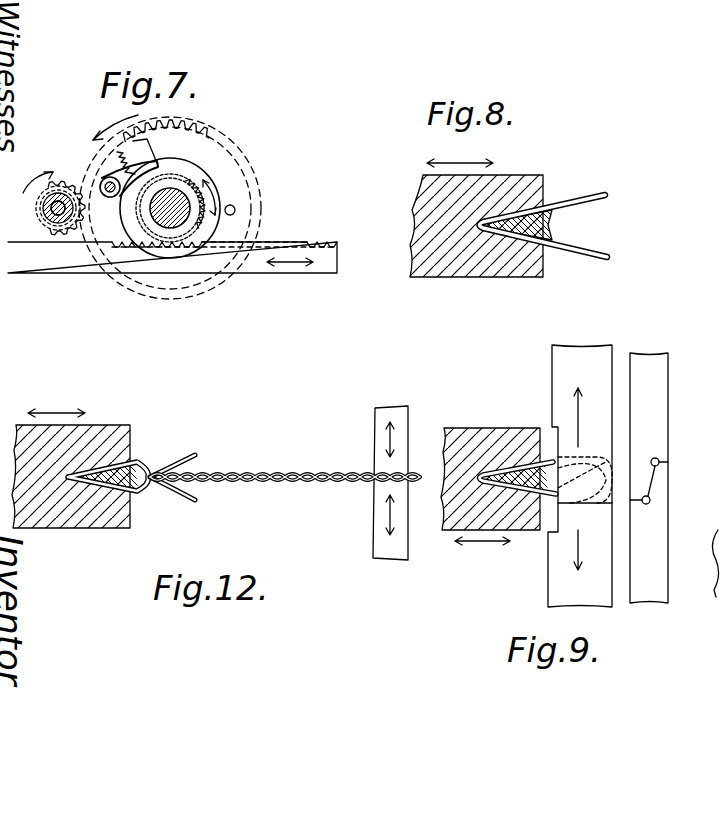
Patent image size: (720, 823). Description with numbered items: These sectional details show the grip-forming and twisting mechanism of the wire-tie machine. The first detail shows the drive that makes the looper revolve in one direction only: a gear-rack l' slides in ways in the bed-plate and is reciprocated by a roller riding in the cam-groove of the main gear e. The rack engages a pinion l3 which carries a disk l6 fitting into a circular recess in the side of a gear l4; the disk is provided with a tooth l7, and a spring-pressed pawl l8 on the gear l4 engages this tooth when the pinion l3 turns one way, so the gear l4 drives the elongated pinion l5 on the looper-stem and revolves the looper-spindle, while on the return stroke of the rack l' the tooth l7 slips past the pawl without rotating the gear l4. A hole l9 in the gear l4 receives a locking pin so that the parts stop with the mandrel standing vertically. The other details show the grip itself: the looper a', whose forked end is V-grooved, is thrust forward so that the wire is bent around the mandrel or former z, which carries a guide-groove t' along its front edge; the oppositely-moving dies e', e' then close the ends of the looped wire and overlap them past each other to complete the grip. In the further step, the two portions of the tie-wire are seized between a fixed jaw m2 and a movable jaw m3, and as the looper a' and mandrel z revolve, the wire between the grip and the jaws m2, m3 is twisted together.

In FIG. 7, the gear-rack l' is at (172, 280).
In FIG. 7, the pinion l3 is at (193, 220).
In FIG. 7, the gear l4 is at (228, 160).
In FIG. 7, the pinion on the looper-stem l5 is at (40, 213).
In FIG. 7, the disk l6 is at (203, 176).
In FIG. 7, the tooth l7 is at (159, 162).
In FIG. 7, the spring-pressed pawl l8 is at (118, 173).
In FIG. 7, the hole l9 is at (236, 210).
In FIG. 8, the mandrel or former z is at (548, 204).
In FIG. 12, the mandrel or former z is at (128, 473).
In FIG. 9, the mandrel or former z is at (560, 464).
In FIG. 8, the guide-groove t' is at (544, 225).
In FIG. 9, the guide-groove t' is at (548, 497).
In FIG. 8, the looper a' is at (478, 241).
In FIG. 12, the looper a' is at (71, 493).
In FIG. 9, the looper a' is at (490, 464).
In FIG. 9, the main gear e is at (672, 478).
In FIG. 9, the dies e' is at (601, 476).
In FIG. 12, the fixed jaw m2 is at (364, 483).
In FIG. 12, the movable jaw m3 is at (357, 515).